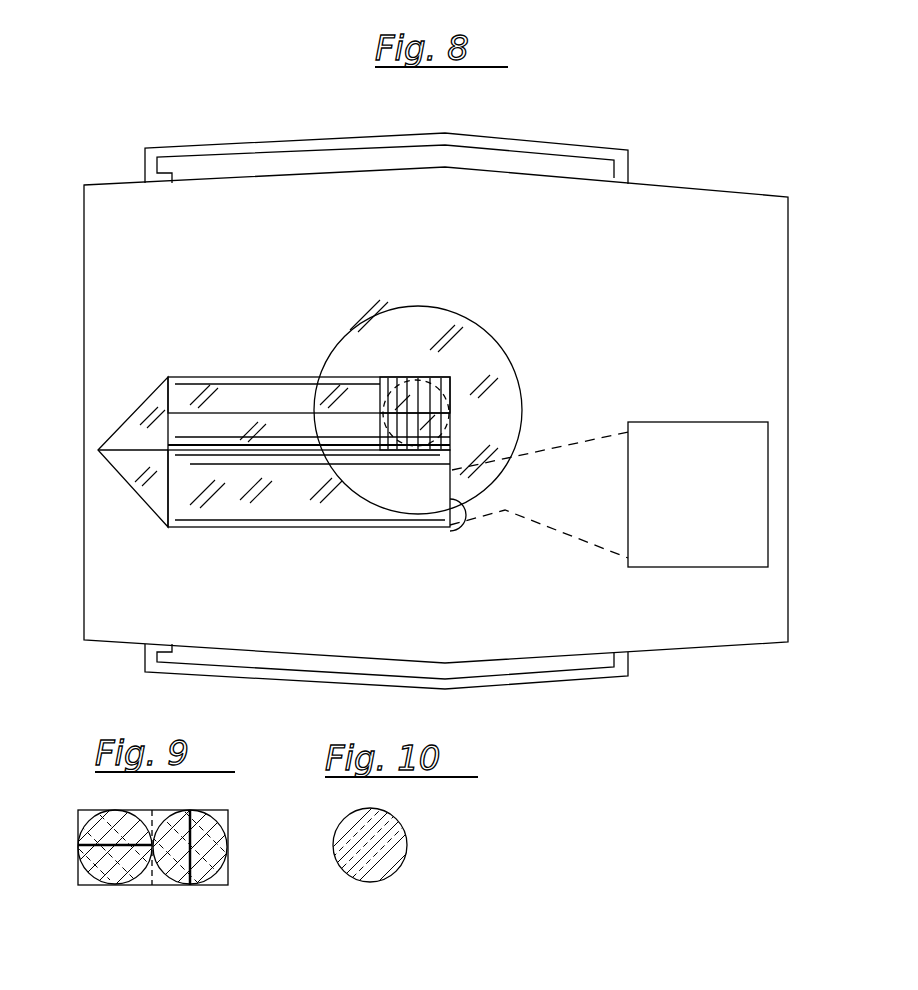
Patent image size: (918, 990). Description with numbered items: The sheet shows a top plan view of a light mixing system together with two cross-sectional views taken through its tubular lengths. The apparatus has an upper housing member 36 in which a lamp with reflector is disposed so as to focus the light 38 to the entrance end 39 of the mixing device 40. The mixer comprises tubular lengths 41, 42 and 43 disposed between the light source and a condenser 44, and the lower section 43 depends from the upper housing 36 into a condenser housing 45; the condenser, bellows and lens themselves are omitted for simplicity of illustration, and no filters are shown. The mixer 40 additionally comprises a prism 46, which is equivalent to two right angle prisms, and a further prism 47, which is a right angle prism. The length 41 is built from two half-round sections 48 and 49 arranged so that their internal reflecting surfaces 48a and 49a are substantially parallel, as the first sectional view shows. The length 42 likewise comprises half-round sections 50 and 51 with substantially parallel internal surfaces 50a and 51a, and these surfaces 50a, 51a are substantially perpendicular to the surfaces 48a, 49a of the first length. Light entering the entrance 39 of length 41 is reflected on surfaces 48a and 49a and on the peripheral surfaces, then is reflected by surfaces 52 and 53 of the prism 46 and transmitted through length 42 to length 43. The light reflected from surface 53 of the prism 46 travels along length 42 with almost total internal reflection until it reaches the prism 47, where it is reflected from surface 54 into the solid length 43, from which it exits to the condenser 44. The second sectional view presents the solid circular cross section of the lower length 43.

In FIG. 8, the upper housing member 36 is at (697, 200).
In FIG. 8, the light 38 is at (585, 455).
In FIG. 8, the entrance end 39 is at (460, 516).
In FIG. 8, the mixing device 40 is at (228, 553).
In FIG. 8, the tubular length 41 is at (343, 514).
In FIG. 9, the tubular length 41 is at (107, 888).
In FIG. 8, the tubular length 42 is at (283, 388).
In FIG. 9, the tubular length 42 is at (213, 888).
In FIG. 8, the tubular length 43 is at (445, 386).
In FIG. 10, the tubular length 43 is at (345, 872).
In FIG. 8, the condenser 44 is at (444, 320).
In FIG. 8, the condenser housing 45 is at (583, 166).
In FIG. 8, the prism 46 is at (126, 503).
In FIG. 9, the prism 46 is at (78, 819).
In FIG. 8, the prism 47 is at (409, 377).
In FIG. 8, the half-round section 48 is at (278, 512).
In FIG. 9, the half-round section 48 is at (130, 830).
In FIG. 9, the internal reflecting surface 48a is at (105, 826).
In FIG. 9, the half-round section 49 is at (82, 863).
In FIG. 9, the internal reflecting surface 49a is at (125, 886).
In FIG. 8, the half-round section 50 is at (340, 432).
In FIG. 9, the half-round section 50 is at (180, 887).
In FIG. 8, the internal surface 50a is at (342, 436).
In FIG. 9, the internal surface 50a is at (188, 830).
In FIG. 8, the half-round section 51 is at (183, 392).
In FIG. 9, the half-round section 51 is at (215, 845).
In FIG. 8, the internal surface 51a is at (232, 408).
In FIG. 9, the internal surface 51a is at (205, 832).
In FIG. 8, the surface 52 is at (120, 475).
In FIG. 8, the surface 53 is at (117, 430).
In FIG. 8, the surface 54 is at (445, 415).